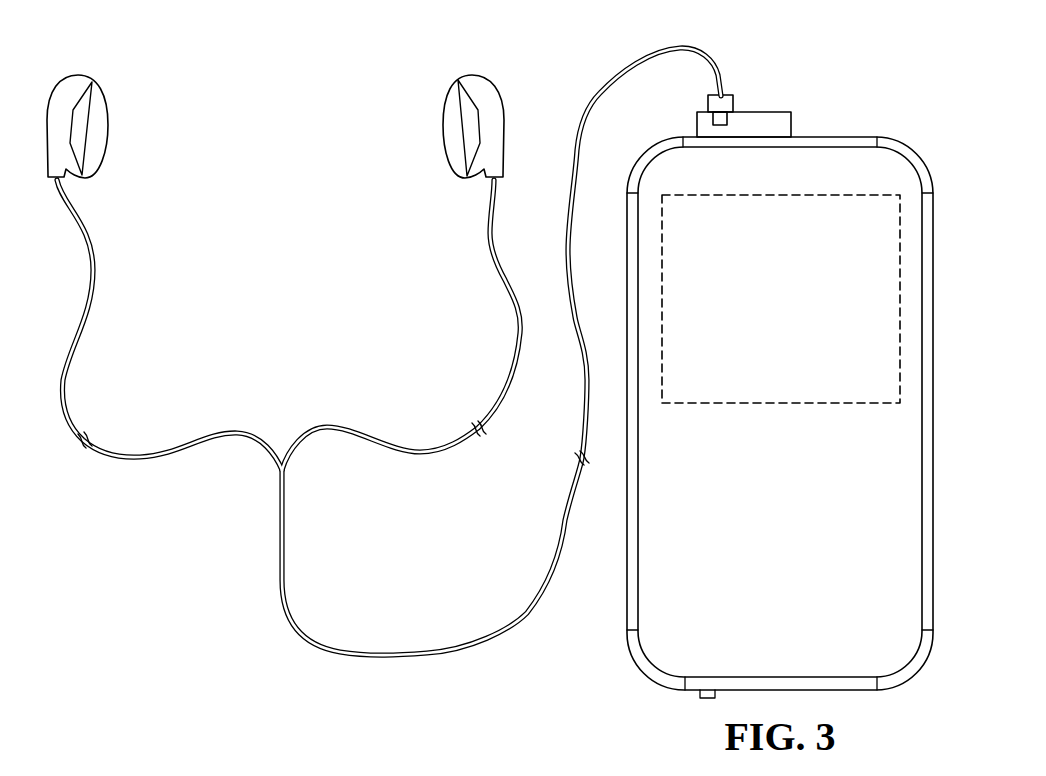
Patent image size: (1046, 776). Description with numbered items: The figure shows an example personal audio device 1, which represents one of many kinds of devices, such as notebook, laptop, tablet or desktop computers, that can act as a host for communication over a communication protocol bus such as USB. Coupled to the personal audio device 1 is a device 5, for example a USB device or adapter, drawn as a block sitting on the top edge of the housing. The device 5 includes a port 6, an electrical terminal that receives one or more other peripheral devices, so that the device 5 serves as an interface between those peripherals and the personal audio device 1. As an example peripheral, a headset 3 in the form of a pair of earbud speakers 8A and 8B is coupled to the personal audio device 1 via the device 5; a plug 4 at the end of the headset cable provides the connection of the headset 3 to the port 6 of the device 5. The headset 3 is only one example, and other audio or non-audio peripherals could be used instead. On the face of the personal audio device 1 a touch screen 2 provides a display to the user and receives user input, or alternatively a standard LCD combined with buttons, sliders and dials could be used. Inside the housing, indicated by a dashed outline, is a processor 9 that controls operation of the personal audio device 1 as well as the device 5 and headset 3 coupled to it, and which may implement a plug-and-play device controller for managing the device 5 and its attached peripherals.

The personal audio device 1 is at (796, 386).
The touch screen 2 is at (771, 574).
The headset 3 is at (232, 430).
The plug 4 is at (708, 105).
The device 5 is at (791, 127).
The port 6 is at (733, 120).
The earbud speaker 8A is at (470, 75).
The earbud speaker 8B is at (80, 75).
The processor 9 is at (803, 404).